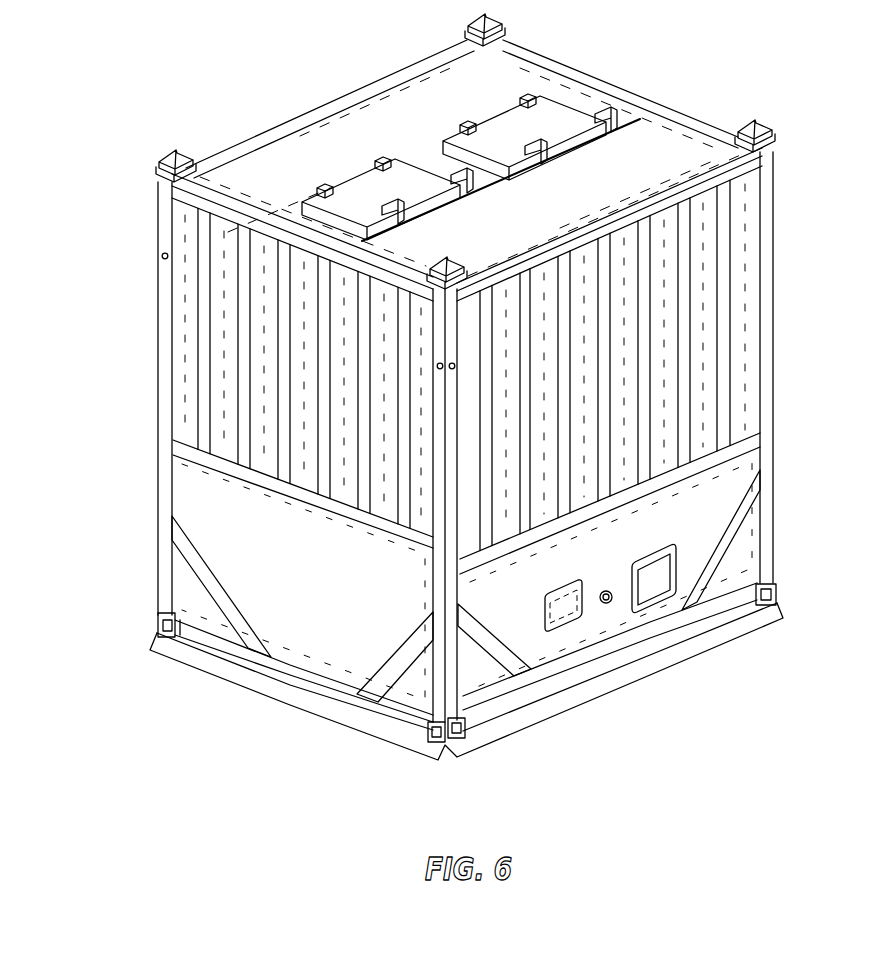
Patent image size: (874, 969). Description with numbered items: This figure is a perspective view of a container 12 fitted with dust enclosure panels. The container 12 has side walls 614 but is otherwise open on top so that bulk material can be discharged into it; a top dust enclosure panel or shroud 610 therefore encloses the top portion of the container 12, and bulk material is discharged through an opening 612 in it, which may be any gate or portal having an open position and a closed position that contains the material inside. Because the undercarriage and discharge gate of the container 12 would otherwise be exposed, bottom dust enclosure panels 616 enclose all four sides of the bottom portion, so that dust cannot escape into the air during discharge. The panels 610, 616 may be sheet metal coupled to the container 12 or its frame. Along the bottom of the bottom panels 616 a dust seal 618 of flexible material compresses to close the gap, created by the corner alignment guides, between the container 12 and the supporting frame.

The container 12 is at (301, 113).
The top dust enclosure panel 610 is at (672, 134).
The opening 612 is at (583, 99).
The side walls 614 is at (238, 343).
The bottom dust enclosure panels 616 is at (312, 640).
The dust seal 618 is at (172, 656).